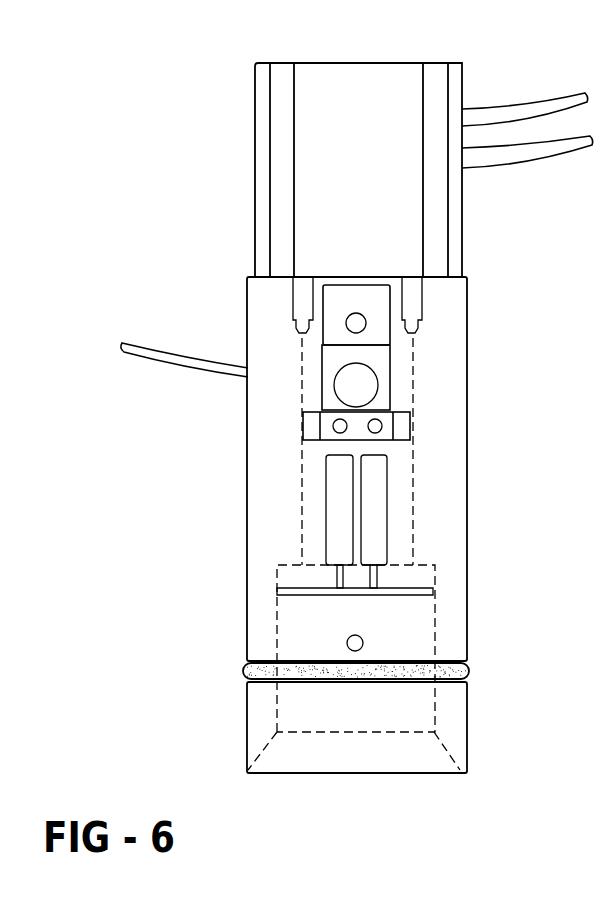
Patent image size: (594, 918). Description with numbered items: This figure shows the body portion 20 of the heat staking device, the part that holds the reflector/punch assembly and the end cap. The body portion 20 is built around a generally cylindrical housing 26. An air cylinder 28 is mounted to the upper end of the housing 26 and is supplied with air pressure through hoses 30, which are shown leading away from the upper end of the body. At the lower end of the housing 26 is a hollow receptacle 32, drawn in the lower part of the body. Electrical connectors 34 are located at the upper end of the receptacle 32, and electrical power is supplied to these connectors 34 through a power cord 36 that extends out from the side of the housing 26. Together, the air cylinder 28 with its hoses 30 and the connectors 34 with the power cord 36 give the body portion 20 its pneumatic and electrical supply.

The body portion 20 is at (488, 437).
The housing 26 is at (263, 555).
The air cylinder 28 is at (383, 360).
The hoses 30 is at (535, 108).
The hollow receptacle 32 is at (360, 755).
The electrical connectors 34 is at (343, 570).
The power cord 36 is at (160, 355).